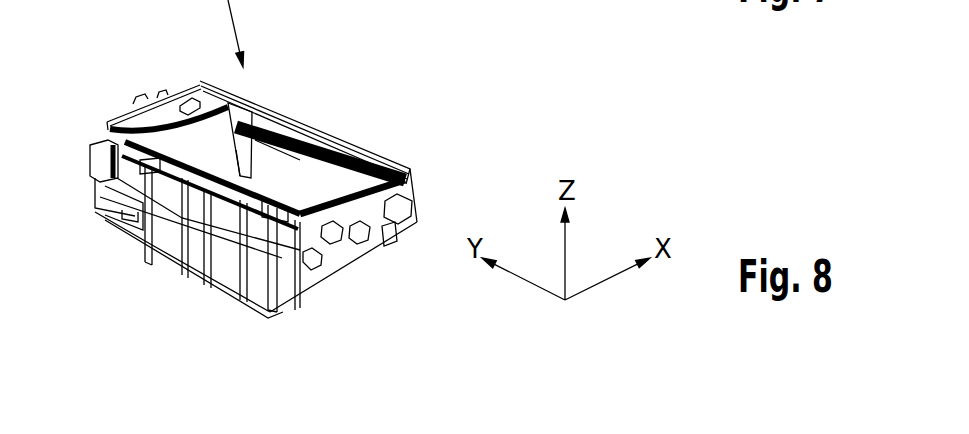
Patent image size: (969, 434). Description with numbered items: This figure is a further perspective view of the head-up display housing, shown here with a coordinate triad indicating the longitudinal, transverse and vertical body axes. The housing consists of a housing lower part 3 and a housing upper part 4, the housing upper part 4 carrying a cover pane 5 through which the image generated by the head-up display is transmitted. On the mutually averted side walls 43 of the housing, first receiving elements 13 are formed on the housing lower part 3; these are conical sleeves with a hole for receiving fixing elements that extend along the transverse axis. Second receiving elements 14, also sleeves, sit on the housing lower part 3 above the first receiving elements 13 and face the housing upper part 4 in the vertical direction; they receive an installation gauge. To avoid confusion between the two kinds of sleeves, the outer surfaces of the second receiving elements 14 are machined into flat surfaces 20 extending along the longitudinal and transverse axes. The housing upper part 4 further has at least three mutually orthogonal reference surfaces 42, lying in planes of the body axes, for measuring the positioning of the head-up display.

The housing lower part 3 is at (282, 283).
The housing upper part 4 is at (187, 85).
The cover pane 5 is at (283, 152).
The first receiving elements 13 is at (160, 93).
The second receiving elements 14 is at (140, 97).
The flat surfaces 20 is at (345, 212).
The reference surfaces 42 is at (160, 200).
The side walls 43 is at (282, 313).